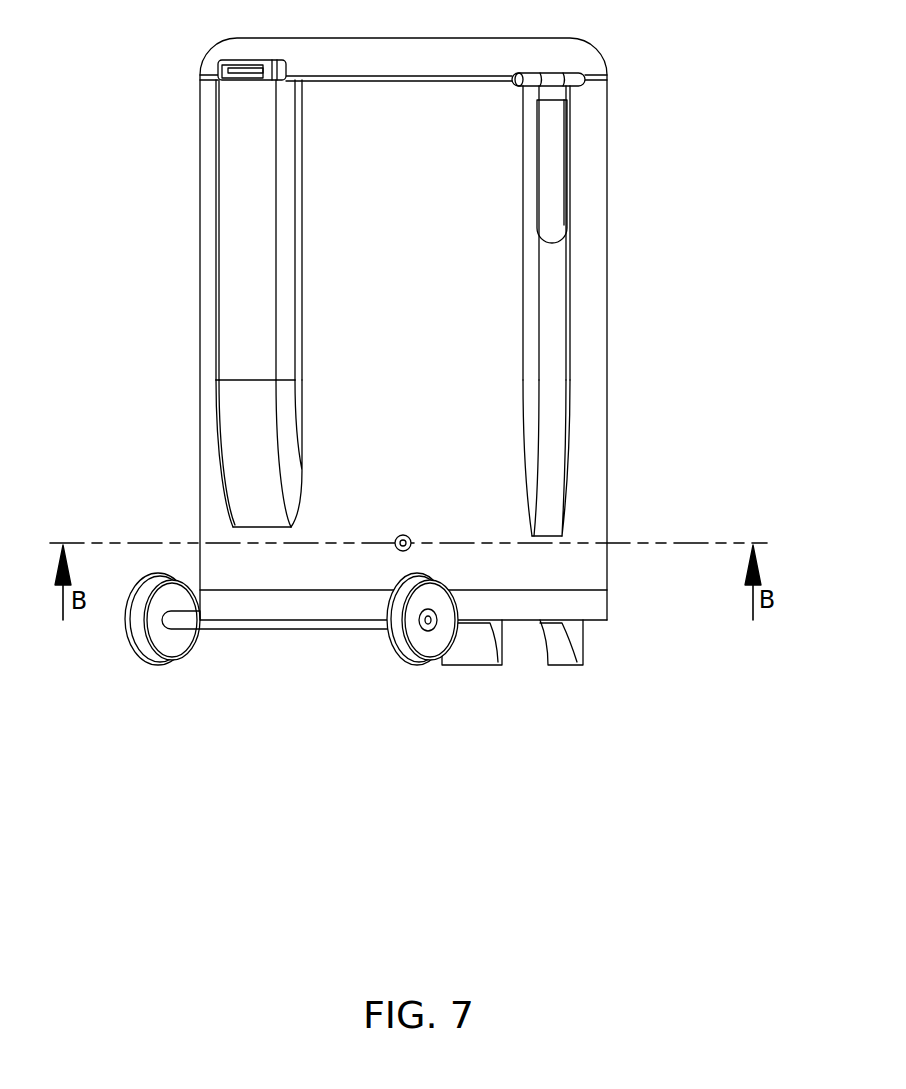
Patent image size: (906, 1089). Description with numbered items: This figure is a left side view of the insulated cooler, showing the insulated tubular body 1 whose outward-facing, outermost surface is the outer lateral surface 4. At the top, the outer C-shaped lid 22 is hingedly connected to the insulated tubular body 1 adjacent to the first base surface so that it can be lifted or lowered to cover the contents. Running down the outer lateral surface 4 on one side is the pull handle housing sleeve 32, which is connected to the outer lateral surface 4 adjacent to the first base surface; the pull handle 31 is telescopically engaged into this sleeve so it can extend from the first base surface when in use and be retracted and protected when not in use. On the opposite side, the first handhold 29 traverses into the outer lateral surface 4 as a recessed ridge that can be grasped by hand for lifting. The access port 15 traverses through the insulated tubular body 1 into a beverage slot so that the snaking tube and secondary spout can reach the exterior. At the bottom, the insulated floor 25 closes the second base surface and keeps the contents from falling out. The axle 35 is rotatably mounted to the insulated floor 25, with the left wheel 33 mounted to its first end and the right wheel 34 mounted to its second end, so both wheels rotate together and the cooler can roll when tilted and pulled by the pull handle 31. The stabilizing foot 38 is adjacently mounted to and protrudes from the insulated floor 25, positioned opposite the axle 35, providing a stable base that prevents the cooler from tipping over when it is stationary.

The insulated tubular body 1 is at (598, 318).
The outer lateral surface 4 is at (398, 350).
The access port 15 is at (396, 540).
The outer C-shaped lid 22 is at (568, 46).
The insulated floor 25 is at (607, 603).
The first handhold 29 is at (542, 106).
The pull handle 31 is at (268, 61).
The pull handle housing sleeve 32 is at (293, 198).
The left wheel 33 is at (407, 649).
The right wheel 34 is at (140, 590).
The axle 35 is at (290, 630).
The stabilizing foot 38 is at (505, 663).